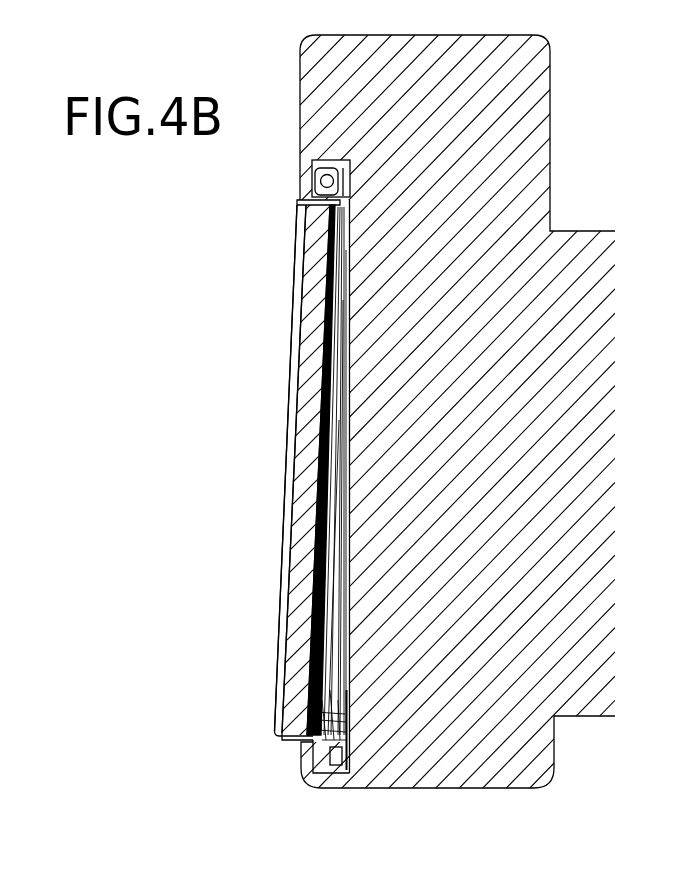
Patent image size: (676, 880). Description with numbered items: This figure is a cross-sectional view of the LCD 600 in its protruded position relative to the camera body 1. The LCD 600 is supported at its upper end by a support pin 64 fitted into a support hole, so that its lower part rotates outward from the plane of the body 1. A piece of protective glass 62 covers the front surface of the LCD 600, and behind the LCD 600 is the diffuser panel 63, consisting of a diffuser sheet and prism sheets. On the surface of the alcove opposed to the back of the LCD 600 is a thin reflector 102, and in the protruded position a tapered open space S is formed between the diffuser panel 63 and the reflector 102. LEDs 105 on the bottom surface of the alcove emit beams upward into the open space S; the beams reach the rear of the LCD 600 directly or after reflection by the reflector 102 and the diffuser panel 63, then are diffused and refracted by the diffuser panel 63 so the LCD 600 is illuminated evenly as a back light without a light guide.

The body 1 is at (485, 755).
The support pin 64 is at (321, 181).
The LCD 600 is at (338, 467).
The open space S is at (333, 523).
The protective glass 62 is at (283, 618).
The diffuser panel 63 is at (287, 695).
The reflector 102 is at (352, 737).
The LEDs 105 is at (330, 748).